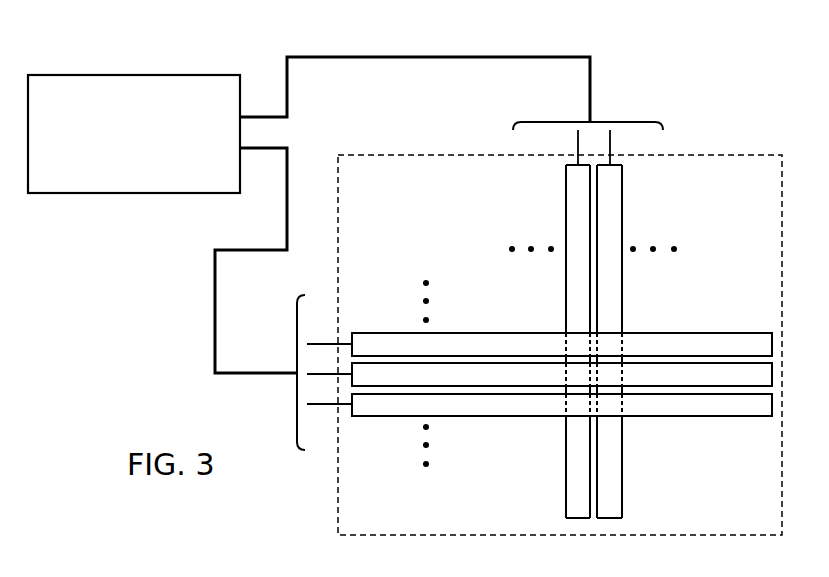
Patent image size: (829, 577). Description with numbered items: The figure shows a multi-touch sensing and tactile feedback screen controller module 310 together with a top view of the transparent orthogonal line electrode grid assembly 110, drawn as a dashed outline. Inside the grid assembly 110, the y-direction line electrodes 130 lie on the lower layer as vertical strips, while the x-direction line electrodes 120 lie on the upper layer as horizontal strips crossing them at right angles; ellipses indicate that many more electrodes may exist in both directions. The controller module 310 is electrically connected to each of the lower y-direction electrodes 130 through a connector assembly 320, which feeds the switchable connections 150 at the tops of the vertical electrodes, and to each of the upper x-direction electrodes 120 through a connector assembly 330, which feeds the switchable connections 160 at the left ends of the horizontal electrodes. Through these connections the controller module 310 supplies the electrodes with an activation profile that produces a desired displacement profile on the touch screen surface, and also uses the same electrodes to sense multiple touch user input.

The orthogonal line electrode grid assembly 110 is at (705, 152).
The x-direction line electrode 120 is at (658, 333).
The y-direction line electrode 130 is at (566, 215).
The switchable connection 150 is at (578, 141).
The switchable connection 160 is at (325, 343).
The multi-touch sensing and tactile feedback screen controller module 310 is at (125, 75).
The connector assembly 320 is at (590, 83).
The connector assembly 330 is at (215, 285).